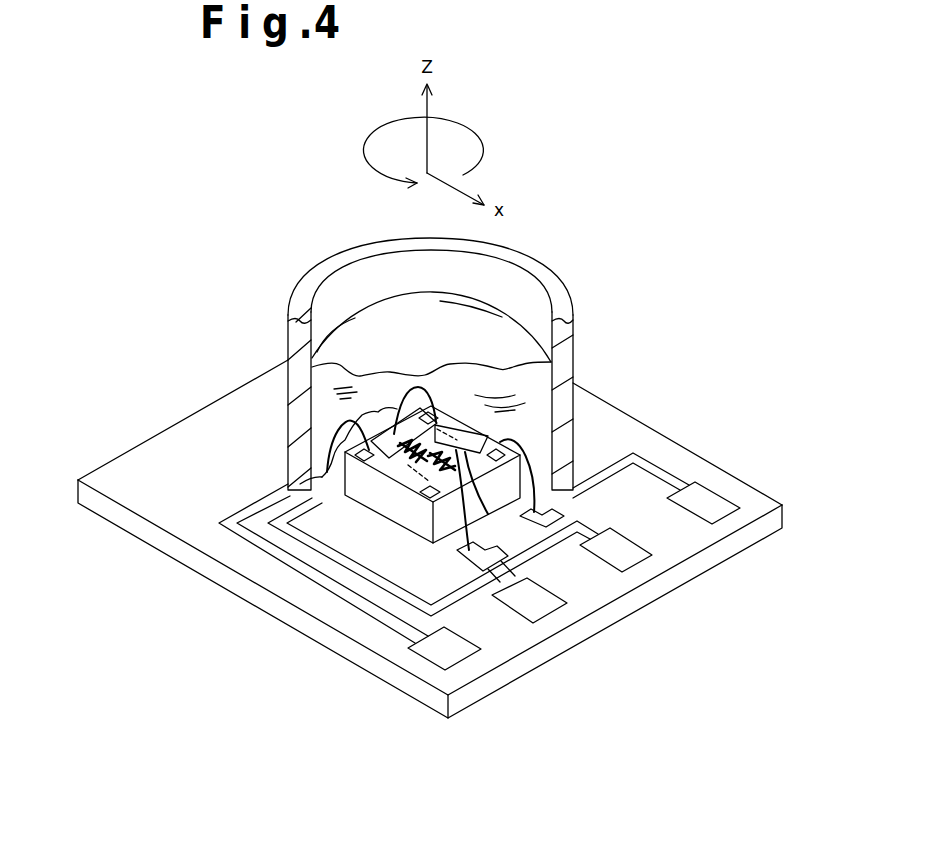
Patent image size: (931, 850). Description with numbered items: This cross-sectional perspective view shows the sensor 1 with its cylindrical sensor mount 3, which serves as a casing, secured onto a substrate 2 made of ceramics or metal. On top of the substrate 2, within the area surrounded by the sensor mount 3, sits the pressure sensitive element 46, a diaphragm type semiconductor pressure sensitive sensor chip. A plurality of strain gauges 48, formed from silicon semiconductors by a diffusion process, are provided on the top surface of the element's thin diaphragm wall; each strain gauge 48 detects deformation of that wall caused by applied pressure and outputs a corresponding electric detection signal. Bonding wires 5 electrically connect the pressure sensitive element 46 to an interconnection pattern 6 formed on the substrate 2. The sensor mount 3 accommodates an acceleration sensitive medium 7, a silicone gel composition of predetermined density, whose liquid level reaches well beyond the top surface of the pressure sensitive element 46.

The sensor device 1 is at (575, 262).
The substrate 2 is at (207, 413).
The sensor mount 3 is at (300, 292).
The bonding wires 5 is at (430, 402).
The interconnection pattern 6 is at (708, 526).
The acceleration sensitive medium 7 is at (393, 299).
The pressure sensitive element 46 is at (392, 501).
The strain gauges 48 is at (366, 470).